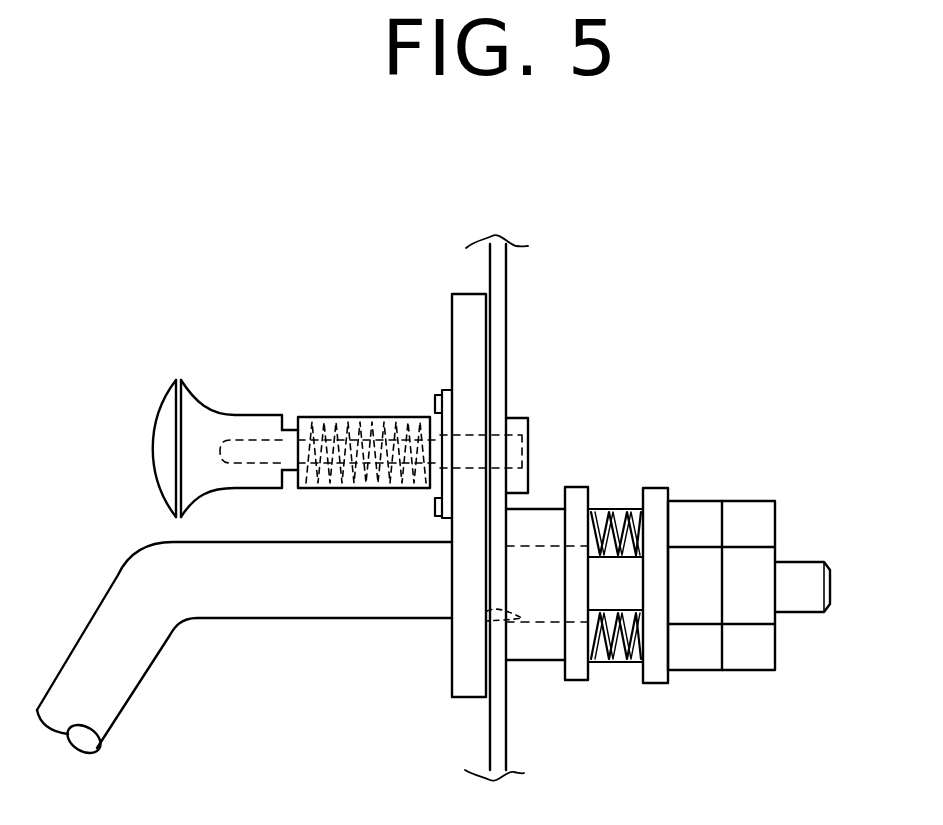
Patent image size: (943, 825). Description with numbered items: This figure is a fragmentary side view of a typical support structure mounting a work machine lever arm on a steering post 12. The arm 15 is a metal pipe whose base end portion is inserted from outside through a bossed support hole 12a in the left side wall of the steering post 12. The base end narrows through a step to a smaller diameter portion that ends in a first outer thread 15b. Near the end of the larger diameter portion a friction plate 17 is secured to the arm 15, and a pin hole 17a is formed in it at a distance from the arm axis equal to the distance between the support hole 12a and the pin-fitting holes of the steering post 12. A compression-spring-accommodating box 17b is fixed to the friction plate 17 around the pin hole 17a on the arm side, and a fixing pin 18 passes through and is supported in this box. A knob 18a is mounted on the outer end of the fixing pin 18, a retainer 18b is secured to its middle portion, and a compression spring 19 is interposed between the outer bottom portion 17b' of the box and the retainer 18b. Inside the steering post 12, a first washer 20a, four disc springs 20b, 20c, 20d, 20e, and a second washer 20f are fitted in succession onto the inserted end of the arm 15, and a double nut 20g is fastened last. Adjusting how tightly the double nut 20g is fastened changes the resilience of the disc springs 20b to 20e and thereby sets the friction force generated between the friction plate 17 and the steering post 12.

The steering post 12 is at (500, 319).
The support hole 12a is at (487, 616).
The arm 15 is at (263, 607).
The first outer thread 15b is at (803, 560).
The friction plate 17 is at (463, 313).
The pin hole 17a is at (528, 420).
The compression-spring-accommodating box 17b is at (338, 477).
The outer bottom portion 17b' is at (301, 393).
The fixing pin 18 is at (462, 508).
The knob 18a is at (197, 407).
The retainer 18b is at (437, 418).
The compression spring 19 is at (383, 417).
The first washer 20a is at (573, 680).
The disc spring 20b is at (642, 543).
The disc spring 20c is at (642, 543).
The disc spring 20d is at (642, 543).
The disc spring 20e is at (643, 480).
The second washer 20f is at (658, 683).
The double nut 20g is at (758, 660).